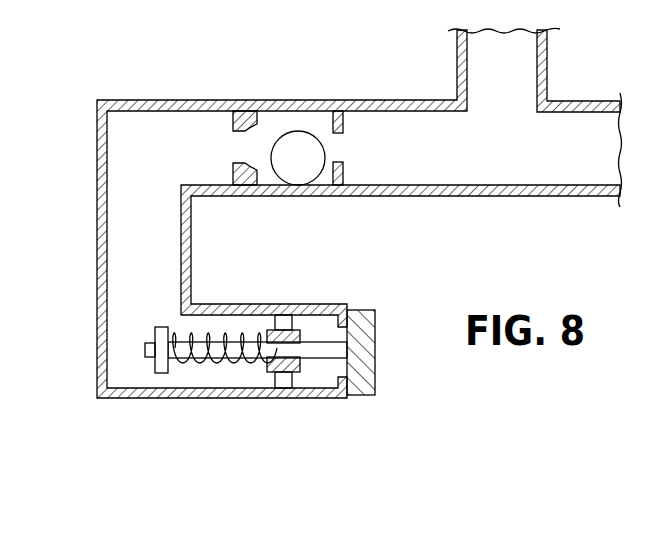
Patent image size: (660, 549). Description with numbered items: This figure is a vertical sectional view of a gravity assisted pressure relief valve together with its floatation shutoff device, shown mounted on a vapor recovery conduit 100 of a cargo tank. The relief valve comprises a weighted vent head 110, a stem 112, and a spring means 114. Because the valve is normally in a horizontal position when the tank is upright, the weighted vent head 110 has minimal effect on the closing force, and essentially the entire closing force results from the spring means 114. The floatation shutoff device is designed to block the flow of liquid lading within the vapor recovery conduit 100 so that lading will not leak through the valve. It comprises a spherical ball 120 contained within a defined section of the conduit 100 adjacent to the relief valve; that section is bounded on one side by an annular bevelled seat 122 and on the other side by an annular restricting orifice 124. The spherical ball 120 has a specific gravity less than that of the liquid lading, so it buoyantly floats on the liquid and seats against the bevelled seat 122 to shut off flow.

The vapor recovery conduit 100 is at (423, 102).
The weighted vent head 110 is at (362, 385).
The stem 112 is at (148, 345).
The spring means 114 is at (210, 362).
The spherical ball 120 is at (298, 131).
The annular bevelled seat 122 is at (240, 113).
The annular restricting orifice 124 is at (345, 111).